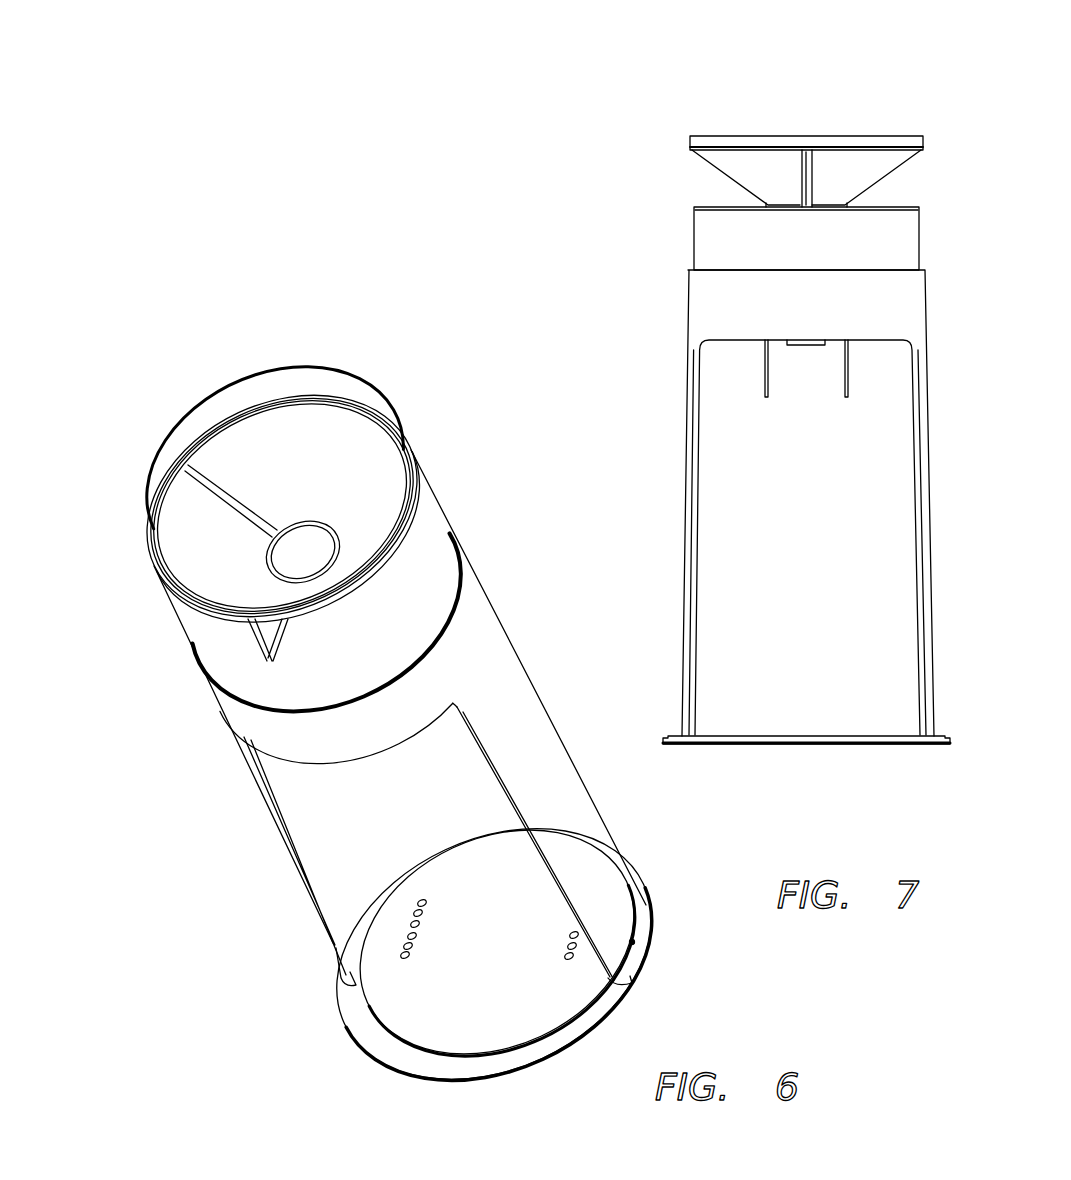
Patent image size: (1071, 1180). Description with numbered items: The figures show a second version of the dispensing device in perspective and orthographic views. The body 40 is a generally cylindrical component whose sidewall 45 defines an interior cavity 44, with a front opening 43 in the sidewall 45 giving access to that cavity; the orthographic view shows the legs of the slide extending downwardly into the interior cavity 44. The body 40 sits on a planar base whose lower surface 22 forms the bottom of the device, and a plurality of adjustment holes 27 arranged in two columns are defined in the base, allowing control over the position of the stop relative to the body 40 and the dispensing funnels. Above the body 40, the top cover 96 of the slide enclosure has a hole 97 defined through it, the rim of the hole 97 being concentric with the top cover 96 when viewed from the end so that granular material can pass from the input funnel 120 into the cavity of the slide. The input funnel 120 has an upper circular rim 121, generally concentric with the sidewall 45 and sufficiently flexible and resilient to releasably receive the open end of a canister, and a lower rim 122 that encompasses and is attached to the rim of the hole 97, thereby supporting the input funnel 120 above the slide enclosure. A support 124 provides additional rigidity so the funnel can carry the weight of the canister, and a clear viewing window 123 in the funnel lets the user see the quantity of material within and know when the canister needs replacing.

In FIG. 6, the upper circular rim 121 is at (192, 442).
In FIG. 7, the upper circular rim 121 is at (803, 138).
In FIG. 6, the lower rim 122 is at (298, 517).
In FIG. 6, the hole 97 is at (313, 557).
In FIG. 6, the clear viewing window 123 is at (225, 507).
In FIG. 7, the clear viewing window 123 is at (798, 177).
In FIG. 6, the support 124 is at (253, 643).
In FIG. 6, the sidewall 45 is at (247, 770).
In FIG. 6, the front opening 43 is at (385, 823).
In FIG. 6, the adjustment holes 27 is at (403, 958).
In FIG. 7, the top cover 96 is at (908, 202).
In FIG. 7, the input funnel 120 is at (672, 170).
In FIG. 7, the body 40 is at (682, 425).
In FIG. 7, the interior cavity 44 is at (804, 540).
In FIG. 7, the lower surface 22 is at (810, 748).